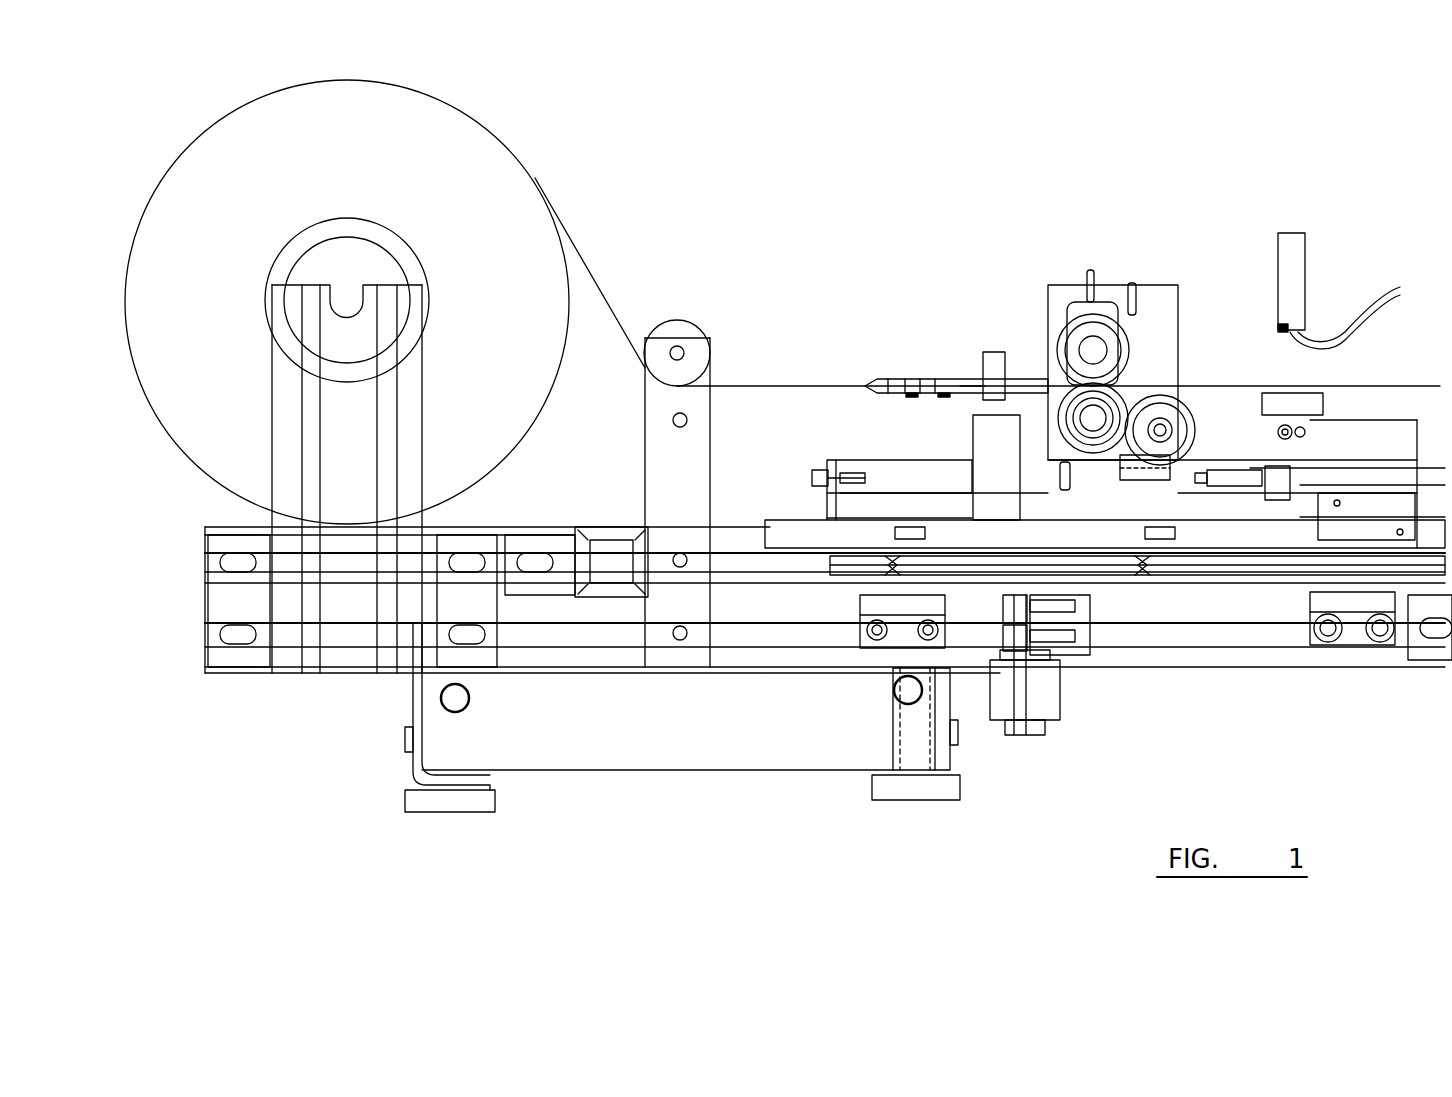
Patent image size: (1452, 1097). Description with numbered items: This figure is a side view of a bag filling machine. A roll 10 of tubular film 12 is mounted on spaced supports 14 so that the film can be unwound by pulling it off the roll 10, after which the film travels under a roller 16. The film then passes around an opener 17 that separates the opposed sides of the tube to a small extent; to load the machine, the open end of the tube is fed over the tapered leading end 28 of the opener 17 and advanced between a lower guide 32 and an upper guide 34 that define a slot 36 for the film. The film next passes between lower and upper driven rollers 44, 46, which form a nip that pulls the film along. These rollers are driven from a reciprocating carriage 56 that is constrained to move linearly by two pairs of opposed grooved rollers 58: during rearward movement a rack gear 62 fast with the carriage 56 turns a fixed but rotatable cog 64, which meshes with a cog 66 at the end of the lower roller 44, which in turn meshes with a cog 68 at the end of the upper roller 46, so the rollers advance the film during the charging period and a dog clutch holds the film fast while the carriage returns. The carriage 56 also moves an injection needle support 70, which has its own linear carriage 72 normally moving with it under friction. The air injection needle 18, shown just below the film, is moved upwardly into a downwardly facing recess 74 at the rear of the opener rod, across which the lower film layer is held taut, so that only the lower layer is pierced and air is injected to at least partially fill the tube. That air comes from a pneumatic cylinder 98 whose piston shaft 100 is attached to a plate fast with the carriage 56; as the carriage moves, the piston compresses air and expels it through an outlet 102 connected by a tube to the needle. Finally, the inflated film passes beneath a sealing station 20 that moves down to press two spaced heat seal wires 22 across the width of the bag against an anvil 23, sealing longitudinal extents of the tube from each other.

The roll 10 is at (535, 182).
The tubular film 12 is at (588, 268).
The spaced supports 14 is at (348, 318).
The roller 16 is at (688, 328).
The opener 17 is at (898, 368).
The air injection needle 18 is at (1190, 385).
The sealing station 20 is at (1310, 244).
The heat seal wires 22 is at (1363, 311).
The anvil 23 is at (1348, 402).
The leading end 28 is at (865, 380).
The lower guide 32 is at (978, 412).
The upper guide 34 is at (995, 352).
The slot 36 is at (980, 385).
The lower driven roller 44 is at (1088, 355).
The upper driven roller 46 is at (1150, 310).
The carriage 56 is at (828, 508).
The grooved rollers 58 is at (860, 650).
The rack gear 62 is at (905, 472).
The cog 64 is at (1185, 445).
The cog 66 is at (1028, 392).
The cog 68 is at (1110, 290).
The injection needle support 70 is at (1240, 465).
The linear carriage 72 is at (1212, 465).
The downwardly facing recess 74 is at (1125, 330).
The pneumatic cylinder 98 is at (650, 730).
The piston shaft 100 is at (975, 695).
The outlet 102 is at (1022, 690).